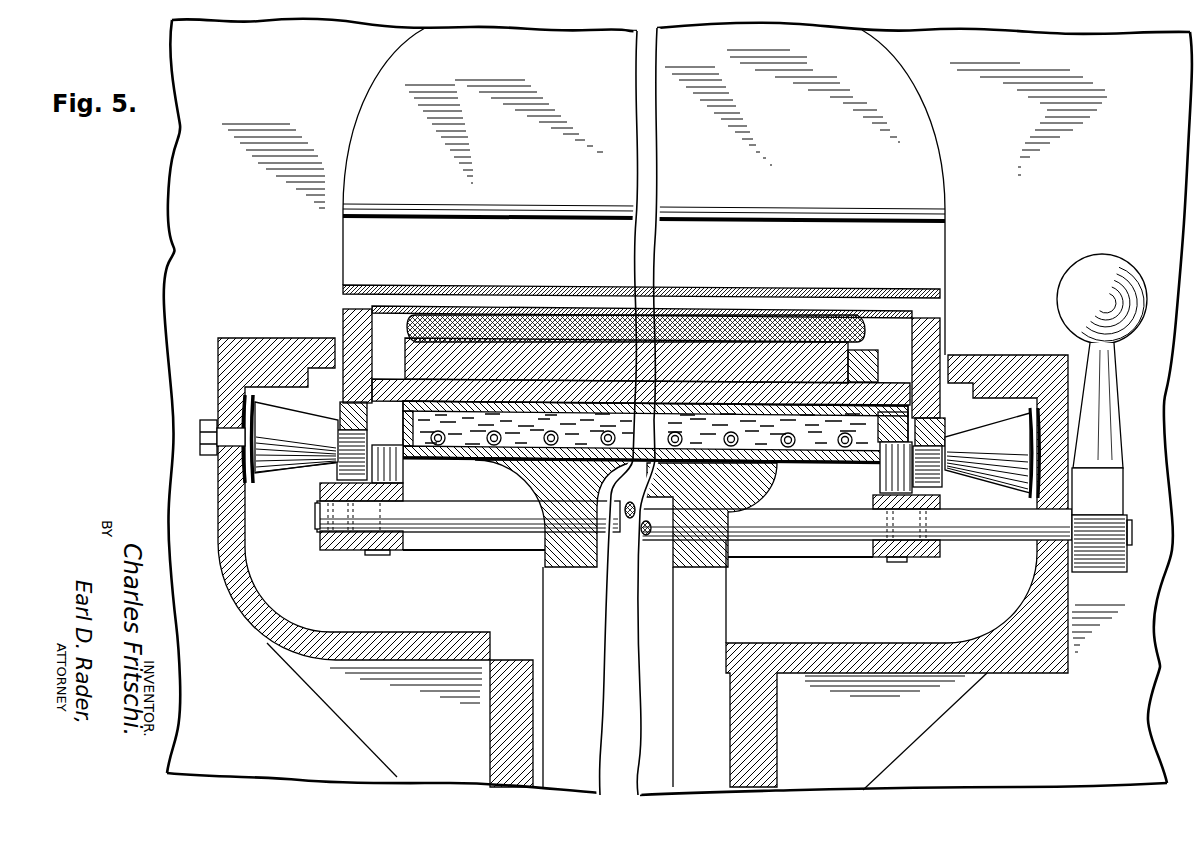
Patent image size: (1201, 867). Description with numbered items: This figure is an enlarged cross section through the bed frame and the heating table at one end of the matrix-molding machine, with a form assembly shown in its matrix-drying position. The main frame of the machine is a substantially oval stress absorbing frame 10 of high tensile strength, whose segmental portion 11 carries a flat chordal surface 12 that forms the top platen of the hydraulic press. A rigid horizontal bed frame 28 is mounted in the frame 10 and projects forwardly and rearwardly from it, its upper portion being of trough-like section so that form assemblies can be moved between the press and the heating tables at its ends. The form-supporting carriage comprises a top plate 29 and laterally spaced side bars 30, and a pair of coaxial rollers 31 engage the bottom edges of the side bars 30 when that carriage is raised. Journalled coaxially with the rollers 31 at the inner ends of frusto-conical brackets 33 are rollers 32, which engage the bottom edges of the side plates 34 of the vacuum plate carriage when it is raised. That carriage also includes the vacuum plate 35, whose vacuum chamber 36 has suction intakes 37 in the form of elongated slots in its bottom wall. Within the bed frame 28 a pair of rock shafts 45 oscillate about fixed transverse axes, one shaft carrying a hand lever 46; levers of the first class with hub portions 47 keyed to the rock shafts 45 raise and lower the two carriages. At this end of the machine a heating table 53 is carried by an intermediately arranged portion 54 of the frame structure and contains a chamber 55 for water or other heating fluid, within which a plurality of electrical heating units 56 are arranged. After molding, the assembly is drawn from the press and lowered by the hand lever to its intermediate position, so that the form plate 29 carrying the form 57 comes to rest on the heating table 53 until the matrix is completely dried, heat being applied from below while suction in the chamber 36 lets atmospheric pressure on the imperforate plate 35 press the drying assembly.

The stress absorbing frame 10 is at (664, 191).
The segmental portion 11 is at (652, 116).
The flat chordal surface 12 is at (864, 224).
The bed frame 28 is at (256, 583).
The top plate 29 is at (389, 378).
The side bars 30 is at (340, 412).
The rollers 31 is at (397, 474).
The rollers 32 is at (338, 470).
The frusto-conical brackets 33 is at (282, 417).
The side plates 34 is at (343, 332).
The vacuum plate 35 is at (740, 286).
The vacuum chamber 36 is at (770, 308).
The suction intakes 37 is at (795, 318).
The rock shafts 45 is at (993, 543).
The hand lever 46 is at (1121, 388).
The hub portions 47 is at (400, 556).
The heating table 53 is at (468, 404).
The intermediately arranged portion 54 is at (687, 592).
The chamber 55 is at (522, 440).
The electrical heating units 56 is at (546, 442).
The form 57 is at (878, 360).